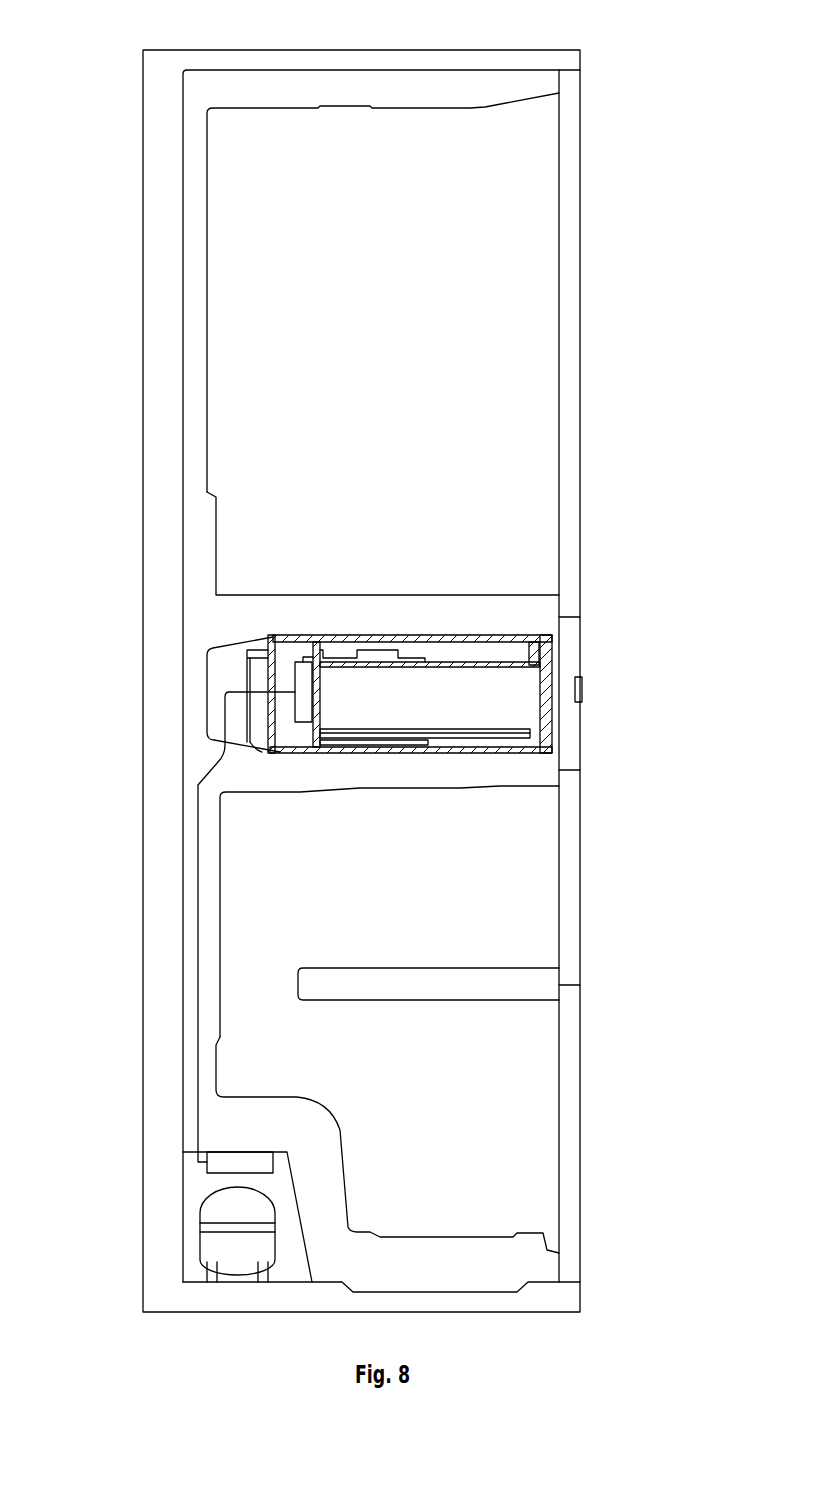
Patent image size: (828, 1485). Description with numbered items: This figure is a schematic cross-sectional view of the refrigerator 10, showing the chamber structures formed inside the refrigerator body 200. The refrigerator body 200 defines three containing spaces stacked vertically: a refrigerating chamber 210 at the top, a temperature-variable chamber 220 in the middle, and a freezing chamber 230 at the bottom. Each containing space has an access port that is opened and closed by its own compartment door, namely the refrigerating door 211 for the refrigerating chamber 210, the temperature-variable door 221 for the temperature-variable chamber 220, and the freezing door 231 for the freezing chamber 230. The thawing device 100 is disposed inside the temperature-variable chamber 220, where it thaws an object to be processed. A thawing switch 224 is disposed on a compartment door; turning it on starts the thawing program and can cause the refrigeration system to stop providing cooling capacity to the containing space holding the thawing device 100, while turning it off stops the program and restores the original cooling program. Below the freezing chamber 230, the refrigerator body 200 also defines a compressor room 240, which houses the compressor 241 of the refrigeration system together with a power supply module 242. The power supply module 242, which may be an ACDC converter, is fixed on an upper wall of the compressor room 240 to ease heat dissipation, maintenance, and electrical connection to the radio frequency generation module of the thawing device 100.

The refrigerator 10 is at (128, 35).
The refrigerator body 200 is at (197, 556).
The refrigerating chamber 210 is at (530, 393).
The refrigerating door 211 is at (568, 232).
The temperature-variable chamber 220 is at (553, 650).
The temperature-variable door 221 is at (568, 735).
The thawing switch 224 is at (583, 690).
The thawing device 100 is at (518, 718).
The freezing chamber 230 is at (523, 1152).
The freezing door 231 is at (568, 910).
The compressor room 240 is at (196, 1204).
The compressor 241 is at (228, 1241).
The power supply module 242 is at (228, 1160).